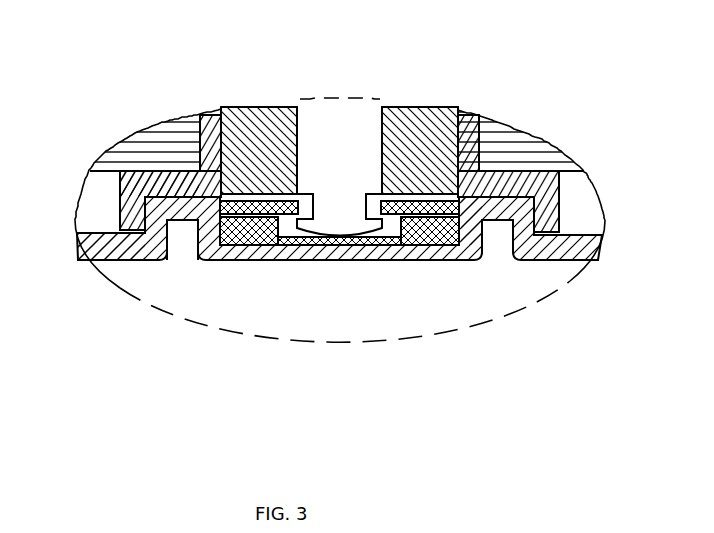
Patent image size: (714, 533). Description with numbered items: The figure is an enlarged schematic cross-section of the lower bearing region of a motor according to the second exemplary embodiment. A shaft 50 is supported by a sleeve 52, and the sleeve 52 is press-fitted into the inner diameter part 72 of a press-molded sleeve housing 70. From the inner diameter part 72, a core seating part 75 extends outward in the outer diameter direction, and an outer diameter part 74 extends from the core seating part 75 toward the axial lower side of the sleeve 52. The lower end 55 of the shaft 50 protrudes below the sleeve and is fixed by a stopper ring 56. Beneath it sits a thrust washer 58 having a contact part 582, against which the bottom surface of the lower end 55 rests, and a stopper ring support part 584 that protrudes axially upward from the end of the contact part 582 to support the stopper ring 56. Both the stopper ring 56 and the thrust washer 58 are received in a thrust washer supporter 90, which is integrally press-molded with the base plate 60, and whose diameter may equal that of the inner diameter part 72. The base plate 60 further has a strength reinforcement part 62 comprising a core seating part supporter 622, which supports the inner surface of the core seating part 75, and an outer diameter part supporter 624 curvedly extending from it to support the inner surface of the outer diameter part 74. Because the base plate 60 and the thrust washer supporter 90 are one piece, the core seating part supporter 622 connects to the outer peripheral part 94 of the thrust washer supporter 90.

The shaft 50 is at (315, 113).
The sleeve 52 is at (250, 120).
The lower end of the shaft 55 is at (330, 206).
The stopper ring 56 is at (468, 205).
The thrust washer 58 is at (347, 344).
The contact part 582 is at (343, 246).
The stopper ring support part 584 is at (441, 225).
The base plate 60 is at (90, 244).
The strength reinforcement part 62 is at (129, 306).
The core seating part supporter 622 is at (178, 222).
The outer diameter part supporter 624 is at (148, 261).
The sleeve housing 70 is at (316, 139).
The inner diameter part 72 is at (207, 142).
The outer diameter part 74 is at (125, 200).
The core seating part 75 is at (122, 196).
The thrust washer supporter 90 is at (280, 290).
The outer peripheral part 94 is at (197, 250).